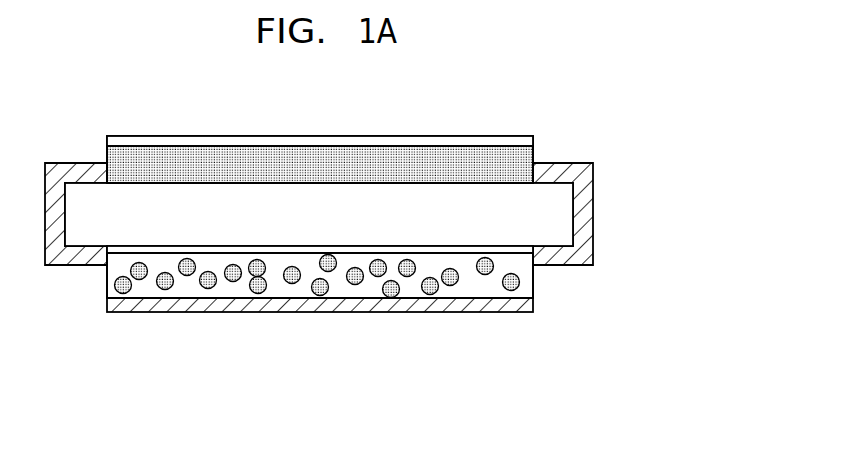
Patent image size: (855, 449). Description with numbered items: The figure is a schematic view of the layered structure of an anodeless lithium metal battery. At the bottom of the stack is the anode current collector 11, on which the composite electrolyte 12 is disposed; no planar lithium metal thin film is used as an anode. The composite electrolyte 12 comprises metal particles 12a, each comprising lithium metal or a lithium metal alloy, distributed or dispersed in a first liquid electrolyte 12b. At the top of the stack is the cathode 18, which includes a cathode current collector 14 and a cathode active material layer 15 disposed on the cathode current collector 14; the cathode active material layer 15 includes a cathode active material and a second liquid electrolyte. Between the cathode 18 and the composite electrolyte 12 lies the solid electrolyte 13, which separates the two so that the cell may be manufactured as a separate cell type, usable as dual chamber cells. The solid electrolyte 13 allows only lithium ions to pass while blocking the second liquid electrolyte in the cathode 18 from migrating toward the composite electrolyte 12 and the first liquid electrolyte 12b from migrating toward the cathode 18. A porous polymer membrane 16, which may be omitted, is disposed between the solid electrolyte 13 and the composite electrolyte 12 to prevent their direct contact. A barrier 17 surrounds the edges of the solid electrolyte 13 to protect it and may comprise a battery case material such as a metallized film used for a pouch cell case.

The anode current collector 11 is at (535, 305).
The composite electrolyte 12 is at (535, 278).
The metal particle 12a is at (390, 298).
The first liquid electrolyte 12b is at (470, 288).
The solid electrolyte 13 is at (560, 220).
The cathode current collector 14 is at (528, 141).
The cathode active material layer 15 is at (527, 163).
The porous polymer membrane 16 is at (517, 248).
The barrier 17 is at (581, 198).
The cathode 18 is at (672, 117).